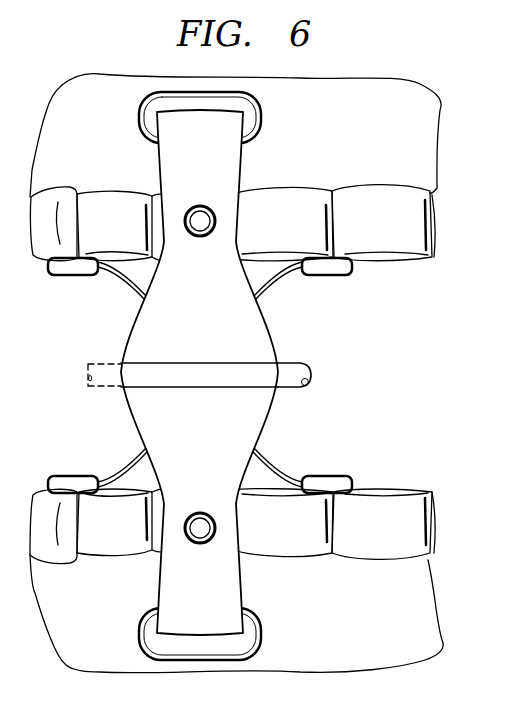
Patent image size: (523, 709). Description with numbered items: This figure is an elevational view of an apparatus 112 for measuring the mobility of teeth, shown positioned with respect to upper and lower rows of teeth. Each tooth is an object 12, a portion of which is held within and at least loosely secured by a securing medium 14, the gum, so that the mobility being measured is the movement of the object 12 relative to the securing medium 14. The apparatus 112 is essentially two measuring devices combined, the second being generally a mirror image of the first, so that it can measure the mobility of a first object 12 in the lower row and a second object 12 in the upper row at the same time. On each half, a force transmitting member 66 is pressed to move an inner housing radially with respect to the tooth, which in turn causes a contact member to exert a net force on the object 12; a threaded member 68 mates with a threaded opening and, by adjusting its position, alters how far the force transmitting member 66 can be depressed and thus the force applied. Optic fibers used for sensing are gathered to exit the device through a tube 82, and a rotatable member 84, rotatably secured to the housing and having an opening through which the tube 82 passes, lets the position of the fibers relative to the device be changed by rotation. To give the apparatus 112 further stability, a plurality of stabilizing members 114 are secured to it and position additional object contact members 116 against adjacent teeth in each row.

The object 12 is at (97, 200).
The securing medium 14 is at (433, 100).
The force transmitting member 66 is at (200, 206).
The threaded member 68 is at (200, 237).
The tube 82 is at (218, 380).
The rotatable member 84 is at (165, 388).
The apparatus 112 is at (367, 352).
The stabilizing members 114 is at (116, 282).
The additional object contact members 116 is at (55, 277).